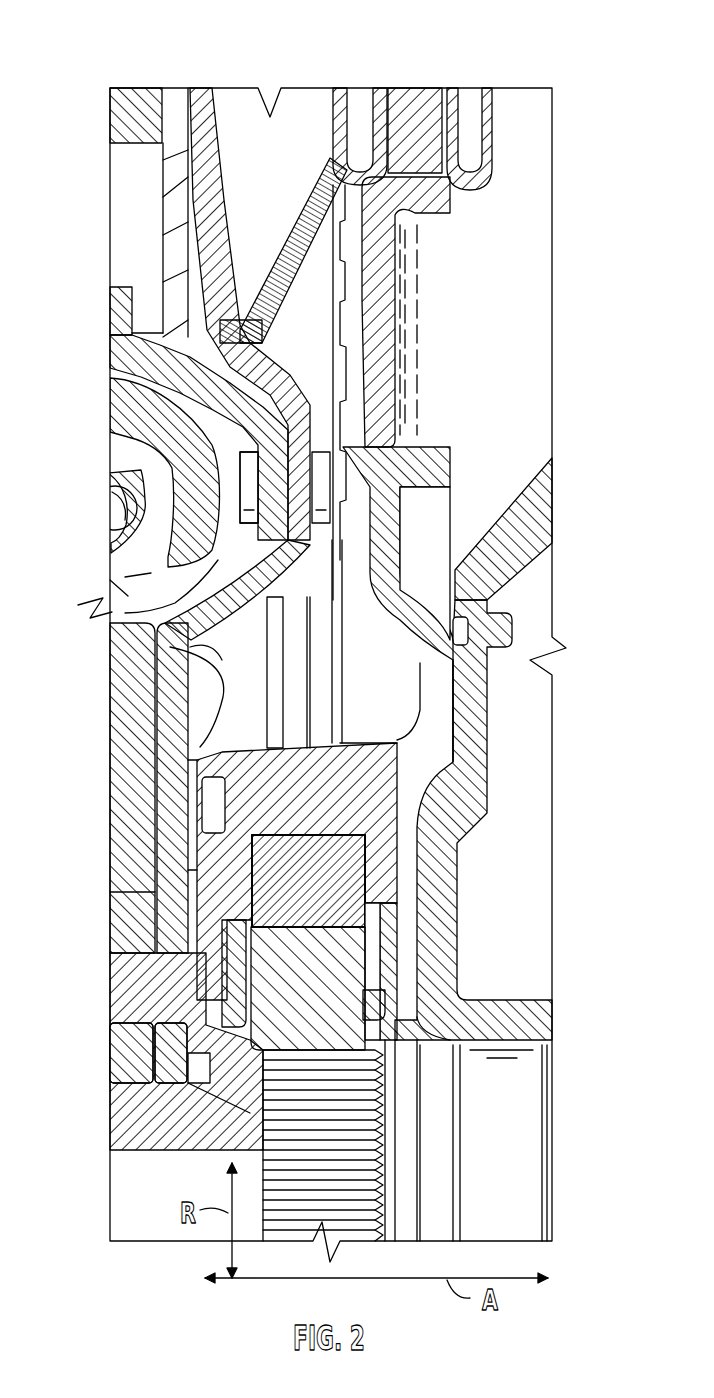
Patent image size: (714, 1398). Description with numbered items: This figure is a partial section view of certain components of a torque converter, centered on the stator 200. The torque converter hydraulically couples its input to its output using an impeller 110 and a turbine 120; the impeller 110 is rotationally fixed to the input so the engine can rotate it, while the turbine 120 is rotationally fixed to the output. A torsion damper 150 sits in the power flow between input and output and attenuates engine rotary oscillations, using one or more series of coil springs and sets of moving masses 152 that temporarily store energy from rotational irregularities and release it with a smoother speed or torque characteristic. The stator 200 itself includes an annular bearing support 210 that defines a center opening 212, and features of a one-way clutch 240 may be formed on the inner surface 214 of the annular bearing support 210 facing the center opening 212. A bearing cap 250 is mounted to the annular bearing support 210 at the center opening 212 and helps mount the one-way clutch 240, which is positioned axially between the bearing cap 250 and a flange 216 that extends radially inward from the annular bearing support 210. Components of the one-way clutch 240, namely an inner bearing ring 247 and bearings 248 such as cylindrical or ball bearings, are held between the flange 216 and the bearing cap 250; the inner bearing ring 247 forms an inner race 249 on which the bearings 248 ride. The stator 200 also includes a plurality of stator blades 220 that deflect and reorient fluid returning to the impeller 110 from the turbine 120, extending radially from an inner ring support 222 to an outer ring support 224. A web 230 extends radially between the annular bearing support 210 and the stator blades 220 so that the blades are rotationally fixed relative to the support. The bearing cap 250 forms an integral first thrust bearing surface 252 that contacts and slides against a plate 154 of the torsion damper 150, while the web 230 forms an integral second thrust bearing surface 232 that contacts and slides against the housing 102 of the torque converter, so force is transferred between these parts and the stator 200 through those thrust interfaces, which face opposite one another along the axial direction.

The housing 102 is at (440, 727).
The impeller 110 is at (537, 505).
The turbine 120 is at (196, 118).
The torsion damper 150 is at (120, 738).
The coil springs and moving masses 152 is at (118, 413).
The plate 154 is at (167, 813).
The stator 200 is at (318, 282).
The annular bearing support 210 is at (380, 797).
The center opening 212 is at (400, 1177).
The inner surface 214 is at (333, 830).
The flange 216 is at (390, 980).
The stator blades 220 is at (385, 305).
The inner ring support 222 is at (430, 450).
The outer ring support 224 is at (440, 212).
The web 230 is at (400, 600).
The second thrust bearing surface 232 is at (460, 700).
The one-way clutch 240 is at (400, 1048).
The inner bearing ring 247 is at (273, 1007).
The bearings 248 is at (340, 872).
The inner race 249 is at (303, 925).
The bearing cap 250 is at (230, 988).
The first thrust bearing surface 252 is at (183, 885).